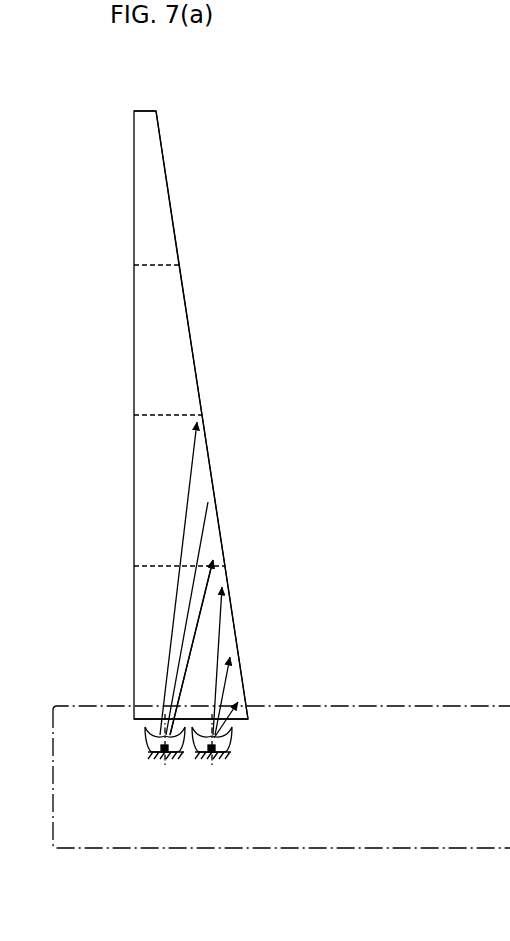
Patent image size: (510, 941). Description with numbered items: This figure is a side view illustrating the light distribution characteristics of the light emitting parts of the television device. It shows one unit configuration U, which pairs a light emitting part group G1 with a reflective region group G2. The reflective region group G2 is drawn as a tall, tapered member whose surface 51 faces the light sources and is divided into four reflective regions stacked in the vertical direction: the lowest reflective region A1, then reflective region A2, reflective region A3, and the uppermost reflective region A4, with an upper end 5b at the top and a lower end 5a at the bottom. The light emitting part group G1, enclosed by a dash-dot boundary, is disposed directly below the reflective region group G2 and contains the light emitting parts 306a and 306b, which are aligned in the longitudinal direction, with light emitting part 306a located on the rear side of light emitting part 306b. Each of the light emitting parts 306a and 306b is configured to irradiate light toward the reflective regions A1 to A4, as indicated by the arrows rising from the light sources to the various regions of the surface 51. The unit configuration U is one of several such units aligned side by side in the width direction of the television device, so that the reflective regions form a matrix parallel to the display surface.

The unit configuration U is at (62, 62).
The light exit surface of projection lens 51 is at (160, 140).
The upper end of projection lens 5b is at (148, 111).
The lower end of projection lens 5a is at (248, 720).
The reflective region A4 is at (171, 197).
The reflective region A3 is at (188, 342).
The reflective region A2 is at (210, 480).
The reflective region A1 is at (237, 623).
The reflective region group G2 is at (212, 223).
The light emitting part group G1 is at (90, 850).
The light emitting part 306a is at (227, 763).
The light emitting part 306b is at (148, 763).